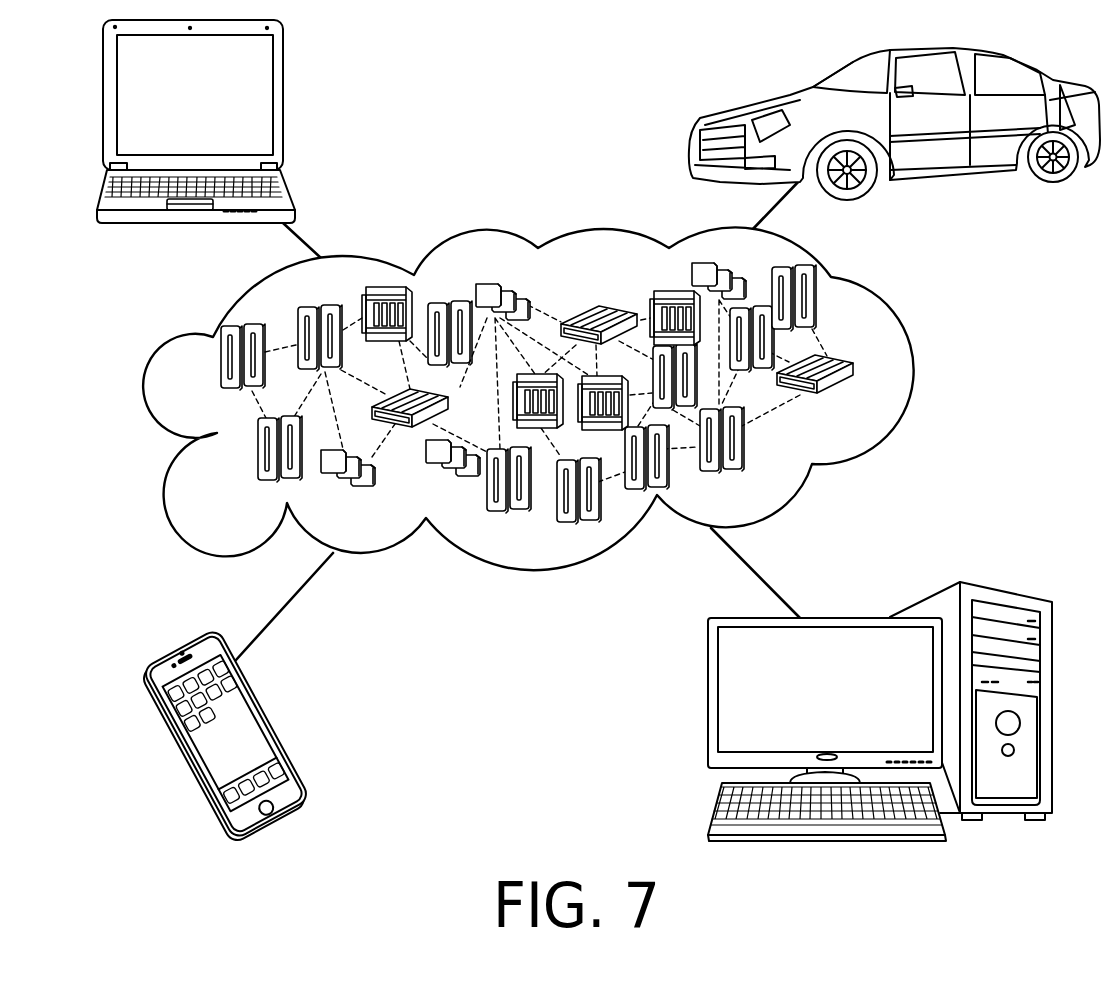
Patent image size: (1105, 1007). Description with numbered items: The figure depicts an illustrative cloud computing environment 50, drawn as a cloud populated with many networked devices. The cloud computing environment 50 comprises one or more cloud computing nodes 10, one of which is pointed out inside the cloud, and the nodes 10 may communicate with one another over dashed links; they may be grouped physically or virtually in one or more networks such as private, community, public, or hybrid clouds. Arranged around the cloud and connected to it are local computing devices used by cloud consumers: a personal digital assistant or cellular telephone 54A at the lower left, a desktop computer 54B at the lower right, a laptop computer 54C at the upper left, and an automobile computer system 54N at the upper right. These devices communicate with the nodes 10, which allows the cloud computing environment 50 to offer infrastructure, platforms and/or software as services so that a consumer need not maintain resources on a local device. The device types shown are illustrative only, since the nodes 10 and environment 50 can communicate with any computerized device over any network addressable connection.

The cloud computing environment 50 is at (564, 398).
The cloud computing node 10 is at (845, 386).
The personal digital assistant or cellular telephone 54A is at (253, 725).
The desktop computer 54B is at (930, 594).
The laptop computer 54C is at (260, 117).
The automobile computer system 54N is at (692, 130).